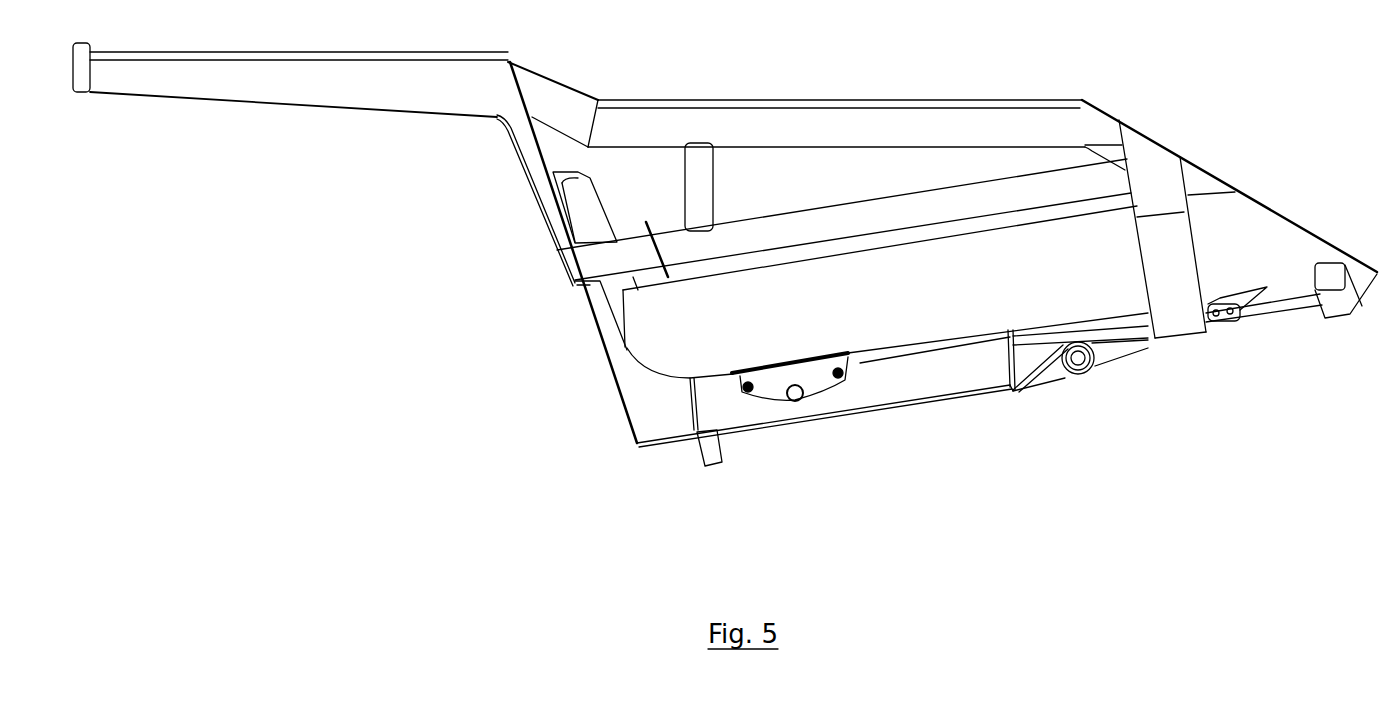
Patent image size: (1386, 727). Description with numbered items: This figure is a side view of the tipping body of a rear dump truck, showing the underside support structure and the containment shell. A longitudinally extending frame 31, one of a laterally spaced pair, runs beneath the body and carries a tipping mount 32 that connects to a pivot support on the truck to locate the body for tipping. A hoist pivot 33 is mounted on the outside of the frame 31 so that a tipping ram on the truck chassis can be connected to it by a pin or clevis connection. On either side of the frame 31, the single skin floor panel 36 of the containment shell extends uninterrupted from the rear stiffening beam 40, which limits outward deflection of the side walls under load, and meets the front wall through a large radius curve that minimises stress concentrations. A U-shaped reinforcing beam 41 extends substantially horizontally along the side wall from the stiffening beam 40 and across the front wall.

The rails or frames 31 is at (933, 378).
The tipping mounts 32 is at (1080, 373).
The hoist pivot 33 is at (848, 352).
The floor panels 36 is at (1067, 247).
The rear stiffening beam 40 is at (1188, 308).
The U-shaped reinforcing beam 41 is at (798, 228).